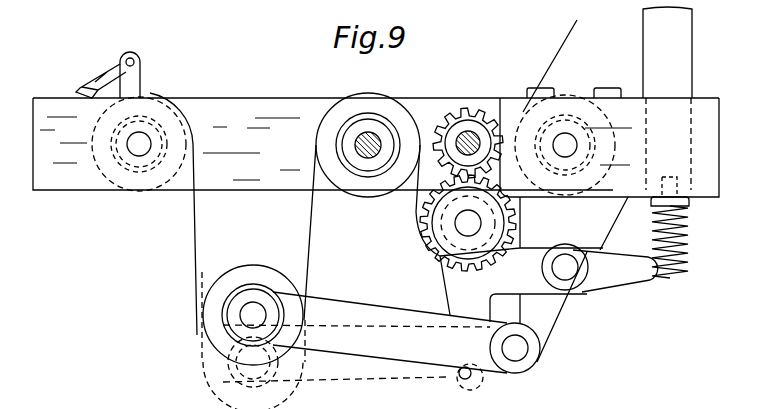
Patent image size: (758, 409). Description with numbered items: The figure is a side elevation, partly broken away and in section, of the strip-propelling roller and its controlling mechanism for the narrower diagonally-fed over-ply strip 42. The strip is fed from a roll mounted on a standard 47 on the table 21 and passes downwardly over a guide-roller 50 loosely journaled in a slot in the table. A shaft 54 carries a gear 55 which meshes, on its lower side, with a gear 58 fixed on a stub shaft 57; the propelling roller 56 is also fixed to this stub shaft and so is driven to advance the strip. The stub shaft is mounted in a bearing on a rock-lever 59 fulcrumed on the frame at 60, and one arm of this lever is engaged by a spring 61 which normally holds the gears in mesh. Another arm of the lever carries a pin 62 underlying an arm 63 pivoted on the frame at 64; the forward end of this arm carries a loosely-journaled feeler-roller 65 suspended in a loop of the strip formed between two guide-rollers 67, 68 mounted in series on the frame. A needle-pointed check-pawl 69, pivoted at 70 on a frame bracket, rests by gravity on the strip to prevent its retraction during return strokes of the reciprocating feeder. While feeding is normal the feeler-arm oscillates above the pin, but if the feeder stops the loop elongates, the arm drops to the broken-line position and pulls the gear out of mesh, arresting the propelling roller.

The table 21 is at (698, 98).
The over-ply strip 42 is at (560, 40).
The standard 47 is at (678, 48).
The guide-roller 50 is at (570, 90).
The shaft 54 is at (452, 127).
The gear 55 is at (456, 130).
The propelling roller 56 is at (422, 216).
The stub shaft 57 is at (466, 225).
The gear 58 is at (433, 228).
The rock-lever 59 is at (532, 284).
The fulcrum 60 is at (582, 290).
The spring 61 is at (689, 237).
The pin 62 is at (460, 377).
The arm 63 is at (397, 342).
The pivot 64 is at (535, 352).
The feeler-roller 65 is at (263, 270).
The guide-roller 67 is at (352, 107).
The guide-roller 68 is at (185, 123).
The check-pawl 69 is at (107, 70).
The pivot 70 is at (134, 58).